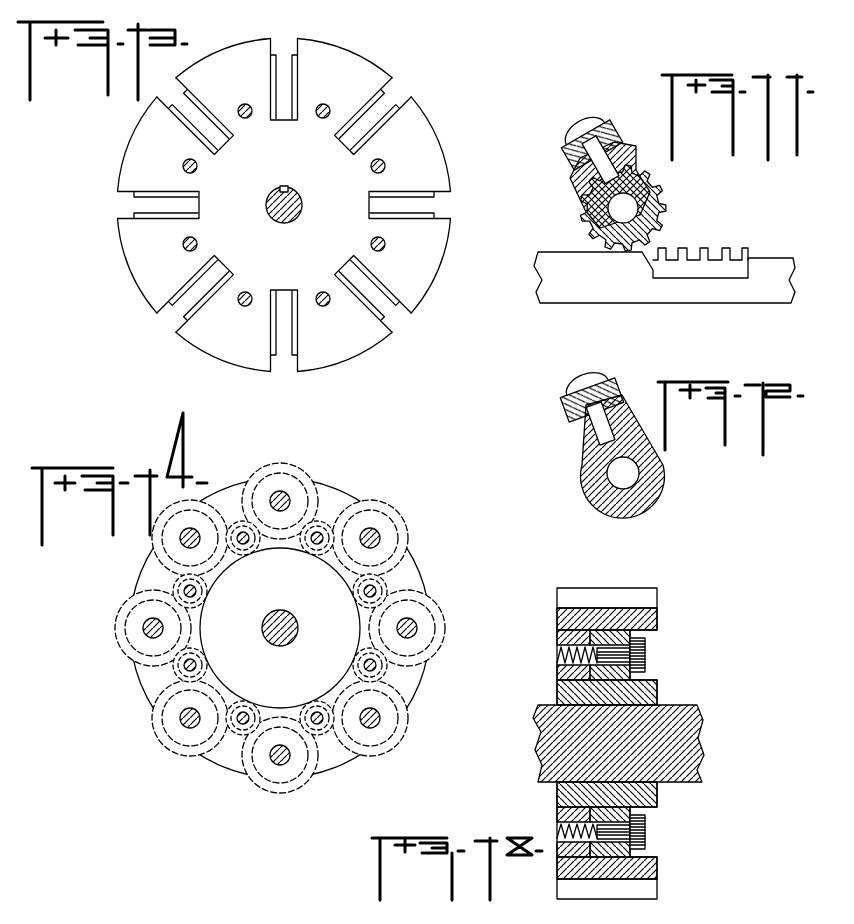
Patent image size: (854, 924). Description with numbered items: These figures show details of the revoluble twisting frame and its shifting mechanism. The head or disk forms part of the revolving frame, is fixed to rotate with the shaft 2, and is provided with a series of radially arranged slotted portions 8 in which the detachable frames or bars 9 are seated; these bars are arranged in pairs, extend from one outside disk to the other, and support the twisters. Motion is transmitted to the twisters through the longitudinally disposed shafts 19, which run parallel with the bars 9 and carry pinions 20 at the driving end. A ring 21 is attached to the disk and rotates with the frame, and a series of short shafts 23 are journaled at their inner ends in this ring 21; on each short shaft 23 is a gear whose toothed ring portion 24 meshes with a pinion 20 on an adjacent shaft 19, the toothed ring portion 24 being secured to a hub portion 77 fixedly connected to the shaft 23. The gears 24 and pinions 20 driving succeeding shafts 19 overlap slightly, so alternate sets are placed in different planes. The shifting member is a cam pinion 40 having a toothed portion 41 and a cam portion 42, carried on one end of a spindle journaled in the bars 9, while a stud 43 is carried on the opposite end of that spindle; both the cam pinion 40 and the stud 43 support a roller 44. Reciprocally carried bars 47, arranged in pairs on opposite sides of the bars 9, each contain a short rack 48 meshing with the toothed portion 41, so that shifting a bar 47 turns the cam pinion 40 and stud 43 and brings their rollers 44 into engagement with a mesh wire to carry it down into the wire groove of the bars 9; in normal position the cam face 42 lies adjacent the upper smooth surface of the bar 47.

In FIG. 13, the shaft 2 is at (272, 195).
In FIG. 14, the shaft 2 is at (263, 638).
In FIG. 13, the slotted portions 8 is at (283, 65).
In FIG. 13, the detachable frames or bars 9 is at (342, 132).
In FIG. 14, the longitudinally disposed shafts 19 is at (183, 592).
In FIG. 14, the pinions 20 is at (312, 543).
In FIG. 14, the ring 21 is at (340, 553).
In FIG. 14, the short shafts 23 is at (417, 605).
In FIG. 18, the short shafts 23 is at (563, 747).
In FIG. 14, the toothed ring portion 24 is at (443, 535).
In FIG. 18, the toothed ring portion 24 is at (568, 620).
In FIG. 11, the cam pinion 40 is at (580, 188).
In FIG. 11, the toothed portion 41 is at (663, 182).
In FIG. 11, the cam portion 42 is at (627, 255).
In FIG. 12, the stud 43 is at (587, 462).
In FIG. 11, the roller 44 is at (575, 143).
In FIG. 12, the roller 44 is at (575, 412).
In FIG. 11, the reciprocally carried bars 47 is at (773, 268).
In FIG. 11, the short rack 48 is at (720, 252).
In FIG. 18, the hub portion 77 is at (635, 695).